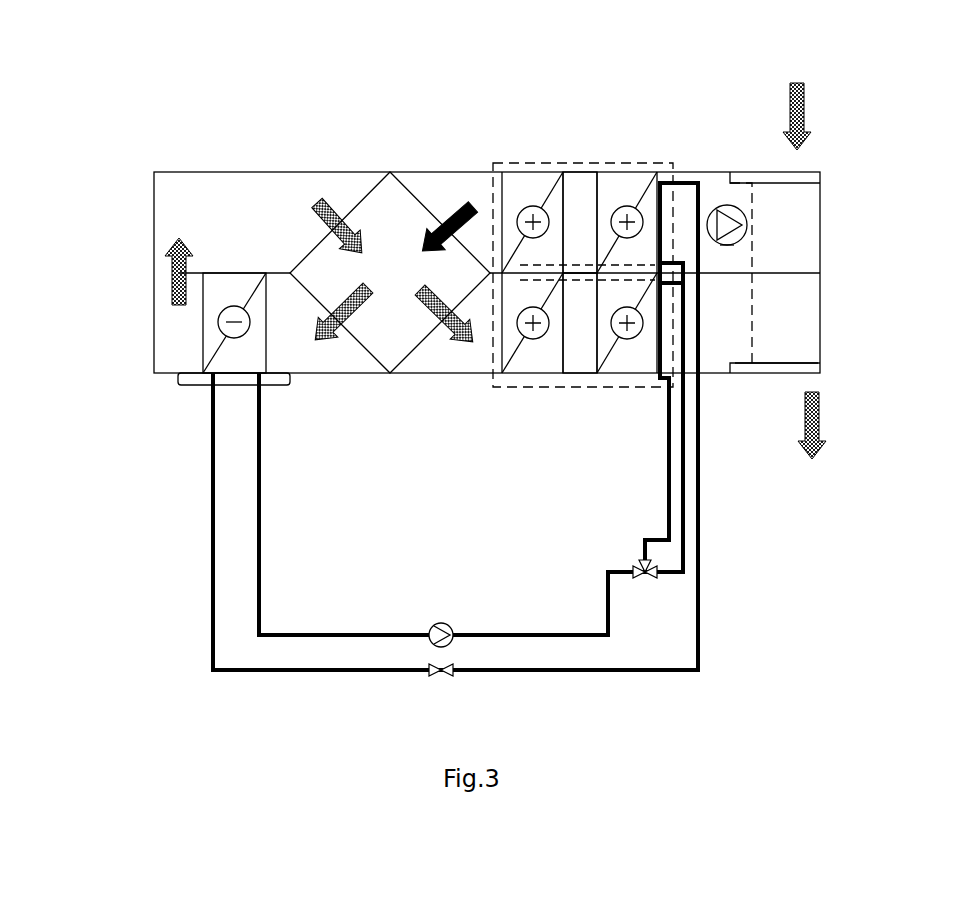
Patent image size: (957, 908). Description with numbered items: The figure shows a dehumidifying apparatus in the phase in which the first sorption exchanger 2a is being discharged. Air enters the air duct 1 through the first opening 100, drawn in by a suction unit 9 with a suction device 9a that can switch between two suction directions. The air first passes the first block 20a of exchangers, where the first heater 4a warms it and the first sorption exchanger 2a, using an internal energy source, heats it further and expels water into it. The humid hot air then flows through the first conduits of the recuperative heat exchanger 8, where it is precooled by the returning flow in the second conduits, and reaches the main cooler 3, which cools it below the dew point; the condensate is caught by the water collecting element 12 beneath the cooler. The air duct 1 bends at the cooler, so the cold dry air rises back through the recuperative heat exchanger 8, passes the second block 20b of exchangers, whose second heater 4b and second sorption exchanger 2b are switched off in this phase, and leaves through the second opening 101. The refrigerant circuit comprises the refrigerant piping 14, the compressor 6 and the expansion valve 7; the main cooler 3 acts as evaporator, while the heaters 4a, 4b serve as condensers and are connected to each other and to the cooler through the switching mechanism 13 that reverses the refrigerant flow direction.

The air duct 1 is at (186, 166).
The main cooler 3 is at (237, 266).
The recuperative heat exchanger 8 is at (336, 269).
The first sorption exchanger 2a is at (538, 170).
The first block of exchangers 20a is at (587, 160).
The first heater 4a is at (629, 170).
The second sorption exchanger 2b is at (535, 376).
The second block of exchangers 20b is at (585, 390).
The second heater 4b is at (638, 376).
The first opening 100 is at (771, 168).
The suction unit 9 is at (764, 185).
The suction device 9a is at (737, 252).
The second opening 101 is at (783, 376).
The water collecting element 12 is at (186, 388).
The switching mechanism 13 is at (658, 578).
The compressor 6 is at (431, 646).
The expansion valve 7 is at (444, 678).
The refrigerant piping 14 is at (540, 640).